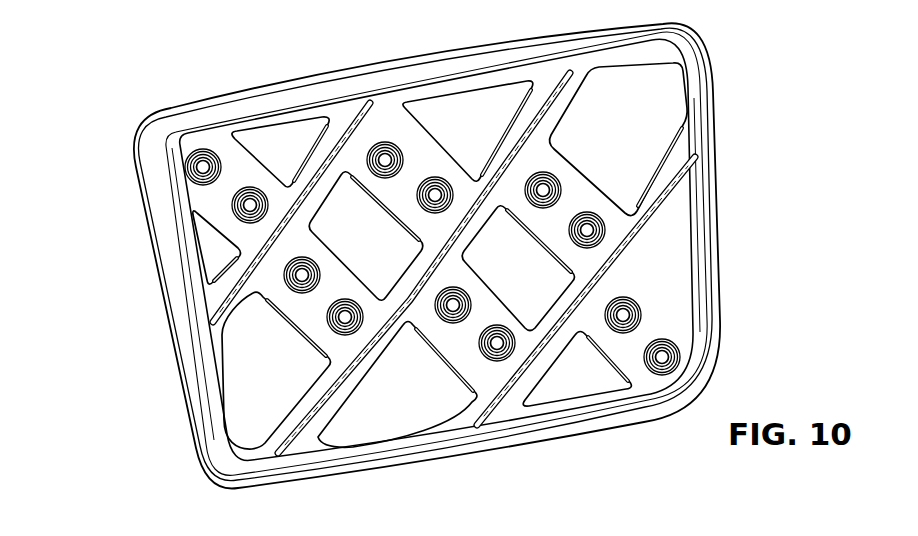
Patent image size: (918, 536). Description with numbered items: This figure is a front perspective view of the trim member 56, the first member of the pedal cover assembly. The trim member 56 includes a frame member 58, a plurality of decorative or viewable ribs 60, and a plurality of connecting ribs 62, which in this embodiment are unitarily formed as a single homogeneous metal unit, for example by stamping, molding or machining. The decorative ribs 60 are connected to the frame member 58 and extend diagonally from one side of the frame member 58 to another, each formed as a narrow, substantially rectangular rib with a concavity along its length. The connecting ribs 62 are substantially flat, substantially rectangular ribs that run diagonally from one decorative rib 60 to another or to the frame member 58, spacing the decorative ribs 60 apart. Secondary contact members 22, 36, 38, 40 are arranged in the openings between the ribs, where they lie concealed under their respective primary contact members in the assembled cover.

The first secondary contact member 22 is at (544, 207).
The second secondary contact member 36 is at (417, 196).
The third secondary contact member 38 is at (184, 167).
The fourth secondary contact member 40 is at (641, 303).
The trim member 56 is at (114, 346).
The frame member 58 is at (470, 440).
The decorative ribs 60 is at (238, 273).
The connecting ribs 62 is at (244, 172).